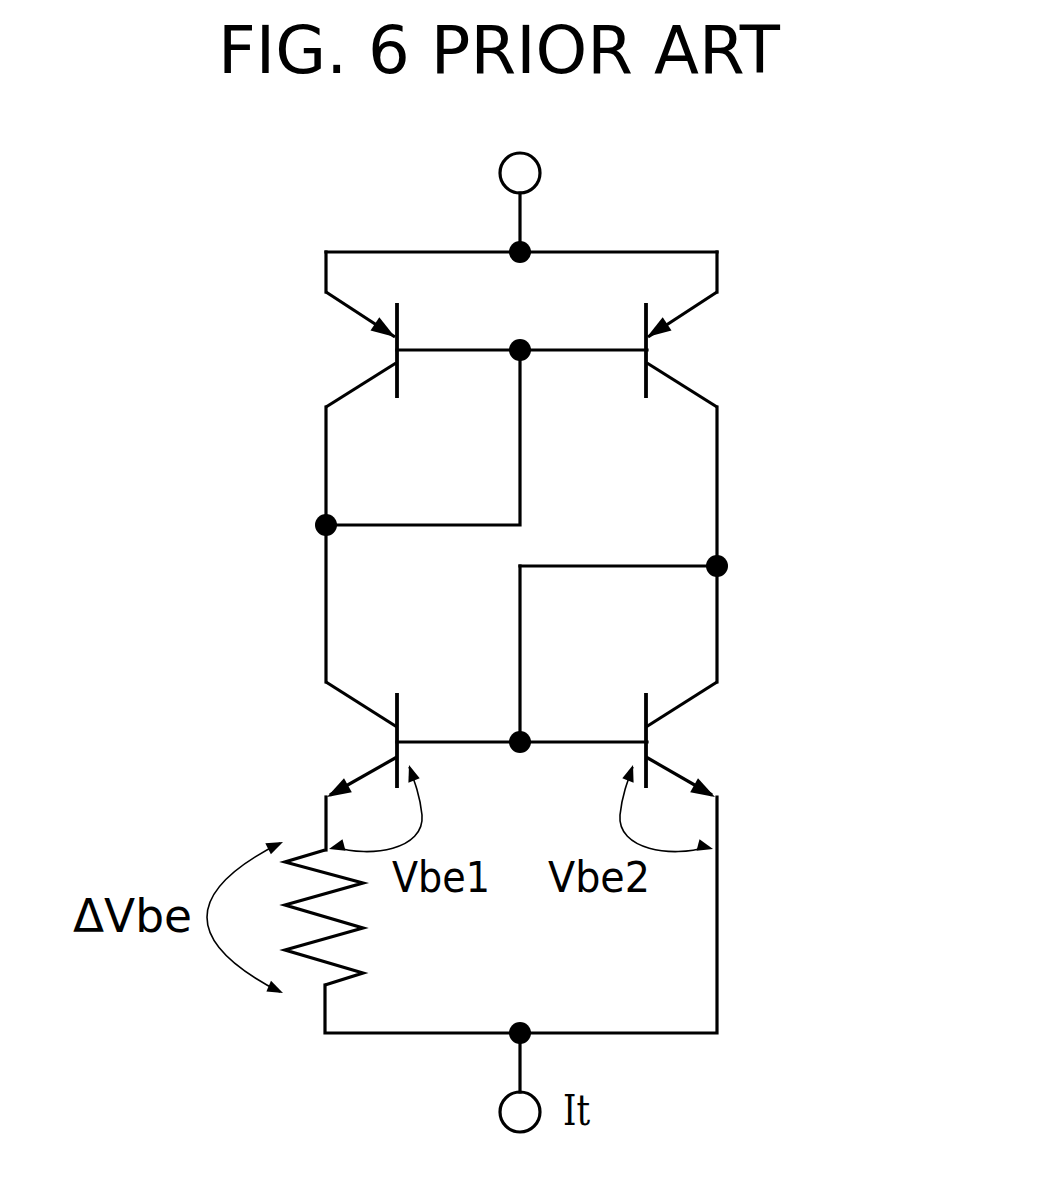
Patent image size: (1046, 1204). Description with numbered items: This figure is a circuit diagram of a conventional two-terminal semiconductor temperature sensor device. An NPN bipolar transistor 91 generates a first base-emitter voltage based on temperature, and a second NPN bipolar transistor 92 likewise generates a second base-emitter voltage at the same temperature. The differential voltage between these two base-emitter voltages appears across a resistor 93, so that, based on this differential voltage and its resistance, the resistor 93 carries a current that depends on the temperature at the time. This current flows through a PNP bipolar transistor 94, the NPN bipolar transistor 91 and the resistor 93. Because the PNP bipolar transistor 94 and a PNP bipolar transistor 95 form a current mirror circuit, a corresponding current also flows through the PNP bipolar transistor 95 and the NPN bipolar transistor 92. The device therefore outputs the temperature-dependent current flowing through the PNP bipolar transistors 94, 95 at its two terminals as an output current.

The NPN bipolar transistor 91 is at (327, 741).
The NPN bipolar transistor 92 is at (718, 742).
The resistor 93 is at (363, 957).
The PNP bipolar transistor 94 is at (327, 349).
The PNP bipolar transistor 95 is at (718, 352).